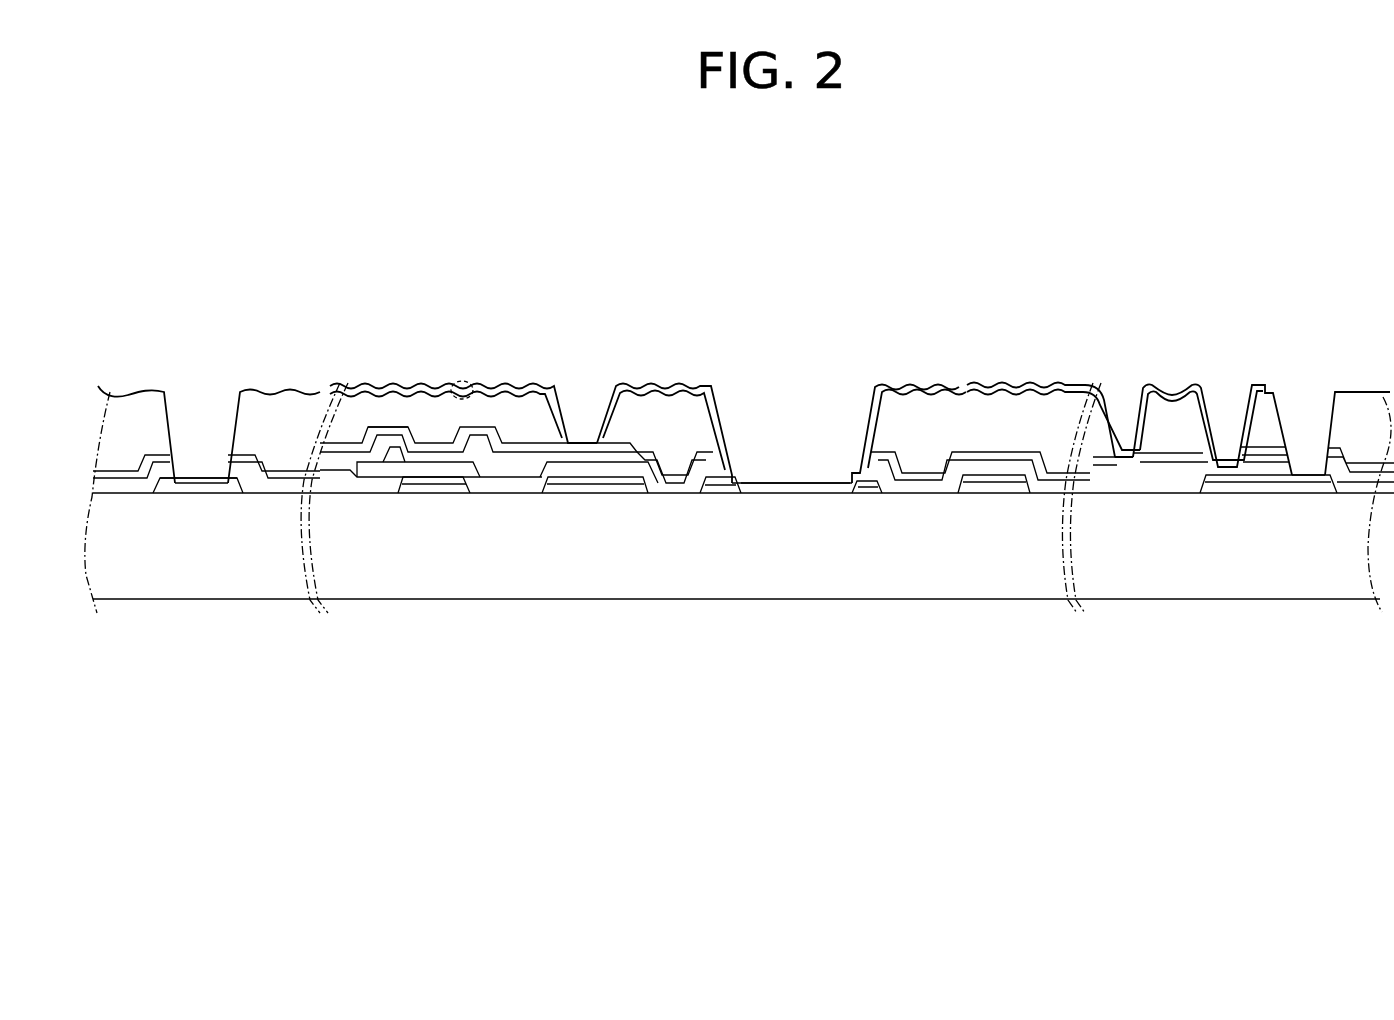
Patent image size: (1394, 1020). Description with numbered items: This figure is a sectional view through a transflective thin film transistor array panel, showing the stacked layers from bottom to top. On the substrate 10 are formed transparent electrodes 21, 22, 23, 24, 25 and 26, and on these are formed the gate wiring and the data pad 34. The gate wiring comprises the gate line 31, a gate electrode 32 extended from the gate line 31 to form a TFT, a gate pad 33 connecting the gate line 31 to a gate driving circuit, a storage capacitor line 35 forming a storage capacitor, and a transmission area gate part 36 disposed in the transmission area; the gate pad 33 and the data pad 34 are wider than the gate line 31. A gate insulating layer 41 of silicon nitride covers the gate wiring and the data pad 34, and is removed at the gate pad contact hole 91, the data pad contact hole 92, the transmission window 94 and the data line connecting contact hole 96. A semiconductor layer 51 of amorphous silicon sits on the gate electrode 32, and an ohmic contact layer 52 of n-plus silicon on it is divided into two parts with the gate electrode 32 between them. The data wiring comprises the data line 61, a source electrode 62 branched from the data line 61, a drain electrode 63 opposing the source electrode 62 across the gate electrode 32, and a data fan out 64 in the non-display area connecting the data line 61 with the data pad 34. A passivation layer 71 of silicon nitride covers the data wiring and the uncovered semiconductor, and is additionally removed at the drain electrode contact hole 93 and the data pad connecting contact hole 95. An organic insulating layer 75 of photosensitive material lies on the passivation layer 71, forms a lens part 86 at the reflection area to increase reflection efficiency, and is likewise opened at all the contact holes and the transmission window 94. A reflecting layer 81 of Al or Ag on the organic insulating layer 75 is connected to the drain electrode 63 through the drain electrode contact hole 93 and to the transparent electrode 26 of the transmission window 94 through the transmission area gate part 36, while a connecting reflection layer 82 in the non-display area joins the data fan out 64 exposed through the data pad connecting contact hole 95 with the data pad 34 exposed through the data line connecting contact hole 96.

The substrate 10 is at (824, 580).
The transparent electrode 21 is at (983, 493).
The transparent electrode 22 is at (423, 493).
The transparent electrode 23 is at (177, 493).
The transparent electrode 24 is at (1232, 493).
The transparent electrode 25 is at (565, 493).
The transparent electrode 26 is at (742, 493).
The gate line 31 is at (1022, 493).
The gate electrode 32 is at (457, 493).
The gate pad 33 is at (233, 493).
The data pad 34 is at (1290, 493).
The storage capacitor line 35 is at (597, 493).
The transmission area gate part 36 is at (883, 493).
The gate insulating layer 41 is at (285, 493).
The semiconductor layer 51 is at (417, 497).
The ohmic contact layer 52 is at (502, 493).
The data line 61 is at (357, 487).
The source electrode 62 is at (380, 437).
The drain electrode 63 is at (520, 458).
The data fan out 64 is at (1118, 495).
The passivation layer 71 is at (157, 455).
The organic insulating layer 75 is at (285, 417).
The reflecting layer 81 is at (642, 392).
The connecting reflection layer 82 is at (1168, 393).
The lens part 86 is at (465, 380).
The gate pad contact hole 91 is at (210, 438).
The data pad contact hole 92 is at (1304, 440).
The drain electrode contact hole 93 is at (591, 431).
The transmission window 94 is at (795, 441).
The data pad connecting contact hole 95 is at (1120, 436).
The data line connecting contact hole 96 is at (1229, 438).